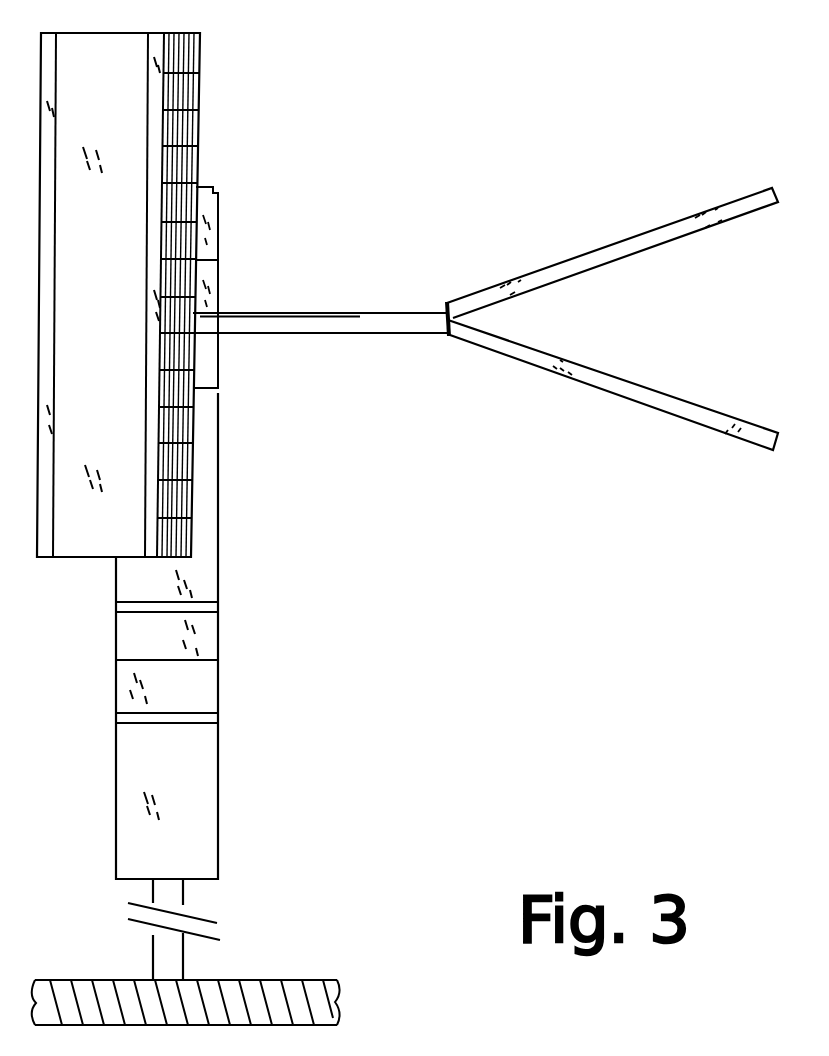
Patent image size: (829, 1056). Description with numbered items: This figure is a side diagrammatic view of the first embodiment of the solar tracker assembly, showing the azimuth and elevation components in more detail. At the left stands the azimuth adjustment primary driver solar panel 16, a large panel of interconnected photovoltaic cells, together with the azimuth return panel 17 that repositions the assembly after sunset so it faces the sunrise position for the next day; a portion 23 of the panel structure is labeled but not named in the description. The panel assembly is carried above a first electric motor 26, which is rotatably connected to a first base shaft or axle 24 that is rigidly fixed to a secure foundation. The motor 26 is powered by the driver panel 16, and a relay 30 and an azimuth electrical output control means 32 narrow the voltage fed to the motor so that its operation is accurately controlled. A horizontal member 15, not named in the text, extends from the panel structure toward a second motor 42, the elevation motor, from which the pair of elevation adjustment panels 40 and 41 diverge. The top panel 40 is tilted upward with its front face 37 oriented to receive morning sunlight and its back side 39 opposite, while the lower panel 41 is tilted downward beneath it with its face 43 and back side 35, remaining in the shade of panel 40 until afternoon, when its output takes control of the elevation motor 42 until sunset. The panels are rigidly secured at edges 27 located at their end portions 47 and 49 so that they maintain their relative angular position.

The horizontal support bar 15 is at (320, 313).
The azimuth adjustment primary driver solar panel 16 is at (203, 120).
The azimuth return panel 17 is at (25, 528).
The display panel 23 is at (124, 101).
The first base shaft or axle 24 is at (187, 907).
The first electric motor 26 is at (225, 808).
The edges 27 is at (446, 308).
The relay 30 is at (205, 698).
The azimuth electrical output control means 32 is at (167, 642).
The back side of lower solar panel 35 is at (591, 390).
The front side or face of upper solar panel 37 is at (582, 253).
The back side of upper solar panel 39 is at (712, 228).
The top elevation adjustment panel 40 is at (693, 214).
The lower elevation adjustment panel 41 is at (707, 431).
The second motor 42 is at (222, 222).
The front side or face of lower solar panel 43 is at (710, 408).
The end portion of top panel 47 is at (474, 290).
The end portion of lower panel 49 is at (470, 350).